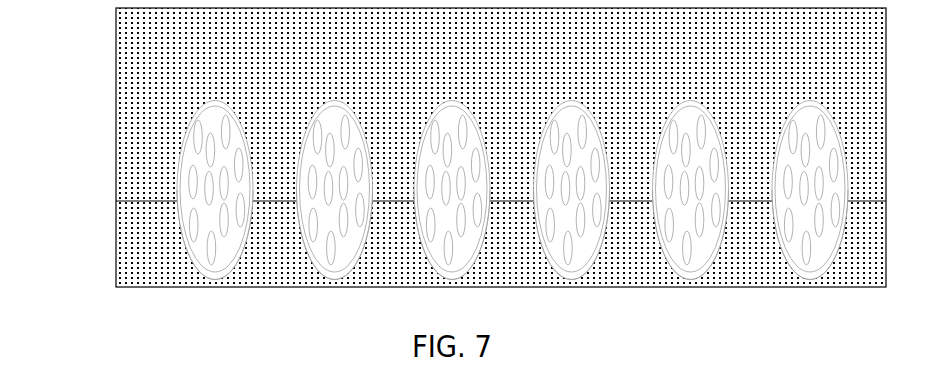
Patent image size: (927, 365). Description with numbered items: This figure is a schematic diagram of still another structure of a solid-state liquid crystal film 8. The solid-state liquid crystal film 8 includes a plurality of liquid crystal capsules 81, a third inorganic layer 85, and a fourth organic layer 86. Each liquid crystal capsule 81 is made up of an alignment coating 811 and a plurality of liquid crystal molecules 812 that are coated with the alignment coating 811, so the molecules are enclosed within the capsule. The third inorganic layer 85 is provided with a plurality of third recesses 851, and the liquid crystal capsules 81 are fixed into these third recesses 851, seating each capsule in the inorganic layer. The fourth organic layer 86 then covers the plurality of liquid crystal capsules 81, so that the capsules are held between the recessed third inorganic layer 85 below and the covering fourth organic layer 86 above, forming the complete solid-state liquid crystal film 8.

The solid-state liquid crystal film 8 is at (459, 166).
The liquid crystal capsule 81 is at (187, 152).
The fourth organic layer 86 is at (116, 168).
The third inorganic layer 85 is at (116, 222).
The third recess 851 is at (180, 243).
The alignment coating 811 is at (320, 270).
The liquid crystal molecule 812 is at (340, 240).